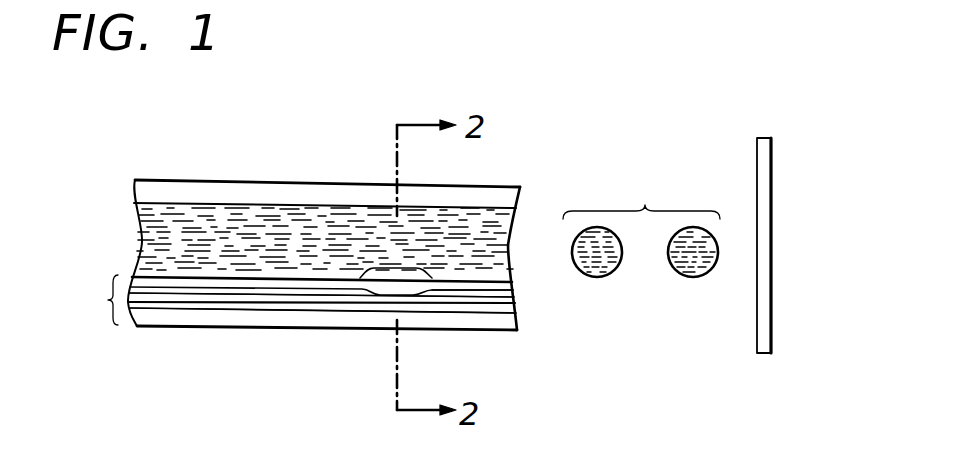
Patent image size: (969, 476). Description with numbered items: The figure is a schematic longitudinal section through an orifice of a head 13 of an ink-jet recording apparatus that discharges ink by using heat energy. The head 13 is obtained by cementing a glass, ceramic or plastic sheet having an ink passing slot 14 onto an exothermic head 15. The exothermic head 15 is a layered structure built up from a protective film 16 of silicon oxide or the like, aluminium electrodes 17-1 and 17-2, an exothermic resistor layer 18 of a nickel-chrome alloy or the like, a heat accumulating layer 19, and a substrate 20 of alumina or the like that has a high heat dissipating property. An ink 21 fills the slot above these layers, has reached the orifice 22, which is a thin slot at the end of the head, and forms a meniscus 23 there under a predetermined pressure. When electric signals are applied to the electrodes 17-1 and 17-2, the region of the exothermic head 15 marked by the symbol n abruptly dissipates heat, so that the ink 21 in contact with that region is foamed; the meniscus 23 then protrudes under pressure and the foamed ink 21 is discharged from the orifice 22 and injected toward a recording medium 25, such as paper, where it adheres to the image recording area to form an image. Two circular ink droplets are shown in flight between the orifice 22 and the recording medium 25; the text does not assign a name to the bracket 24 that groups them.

The head 13 is at (215, 180).
The ink passing slot 14 is at (265, 204).
The ink 21 is at (170, 216).
The heat dissipating region n is at (398, 265).
The exothermic head 15 is at (298, 300).
The protective film 16 is at (163, 280).
The aluminium electrode 17-1 is at (212, 292).
The aluminium electrode 17-2 is at (477, 295).
The exothermic resistor layer 18 is at (258, 298).
The heat accumulating layer 19 is at (307, 308).
The substrate 20 is at (368, 320).
The orifice 22 is at (525, 270).
The meniscus 23 is at (510, 233).
The rollers 24 is at (641, 227).
The recording medium 25 is at (757, 170).